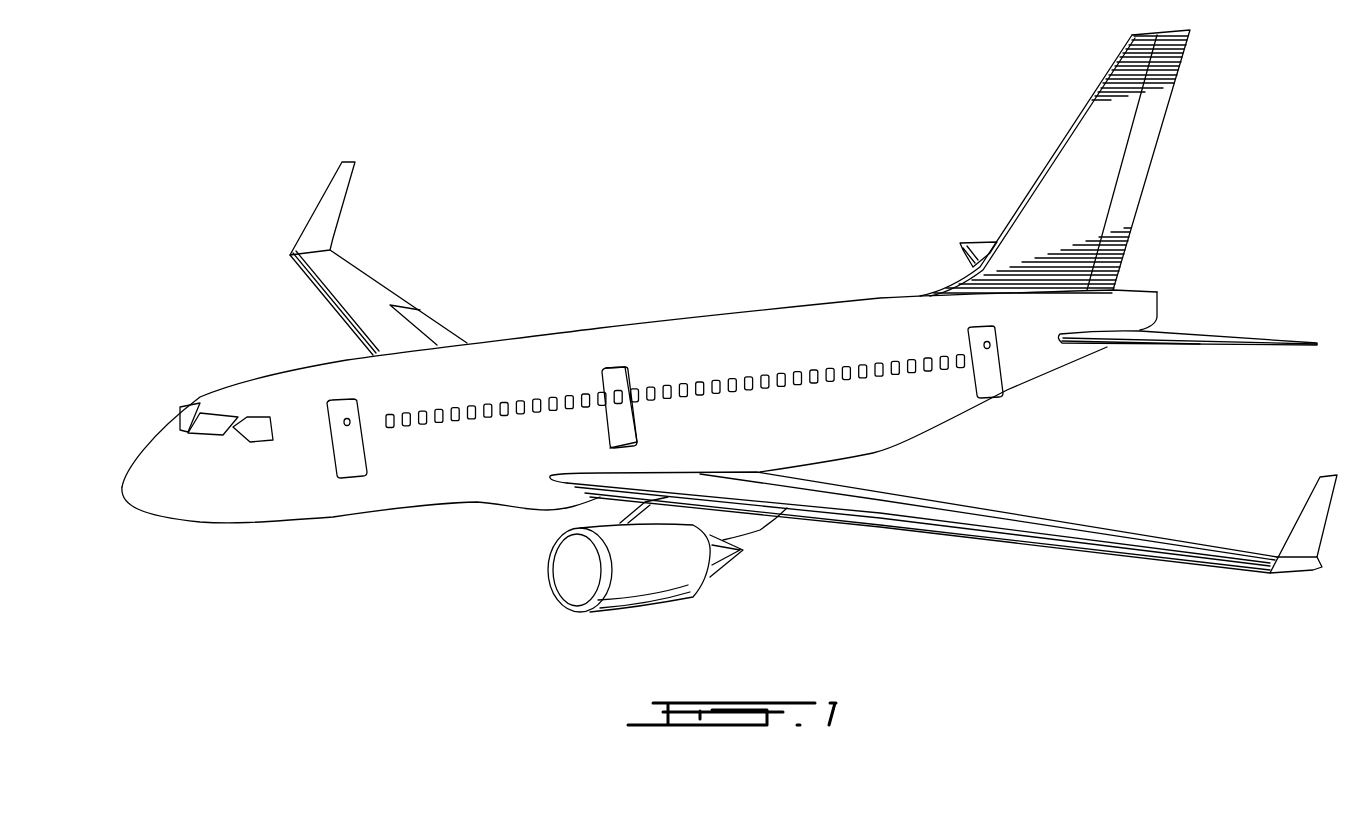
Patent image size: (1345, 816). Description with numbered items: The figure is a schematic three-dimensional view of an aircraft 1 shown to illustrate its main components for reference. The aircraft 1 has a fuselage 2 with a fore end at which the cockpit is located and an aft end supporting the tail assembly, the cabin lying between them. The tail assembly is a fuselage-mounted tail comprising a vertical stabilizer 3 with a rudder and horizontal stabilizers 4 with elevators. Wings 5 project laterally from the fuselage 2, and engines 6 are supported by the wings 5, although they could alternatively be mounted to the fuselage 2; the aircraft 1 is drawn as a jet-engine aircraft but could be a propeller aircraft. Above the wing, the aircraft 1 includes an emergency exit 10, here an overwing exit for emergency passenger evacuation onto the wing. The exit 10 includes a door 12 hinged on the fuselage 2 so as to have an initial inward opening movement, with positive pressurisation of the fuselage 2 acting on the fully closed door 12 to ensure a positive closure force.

The aircraft 1 is at (616, 262).
The fuselage 2 is at (413, 483).
The vertical stabilizer 3 is at (1082, 158).
The horizontal stabilizers 4 is at (973, 250).
The wings 5 is at (363, 297).
The engines 6 is at (683, 583).
The emergency exit 10 is at (620, 360).
The door 12 is at (618, 433).